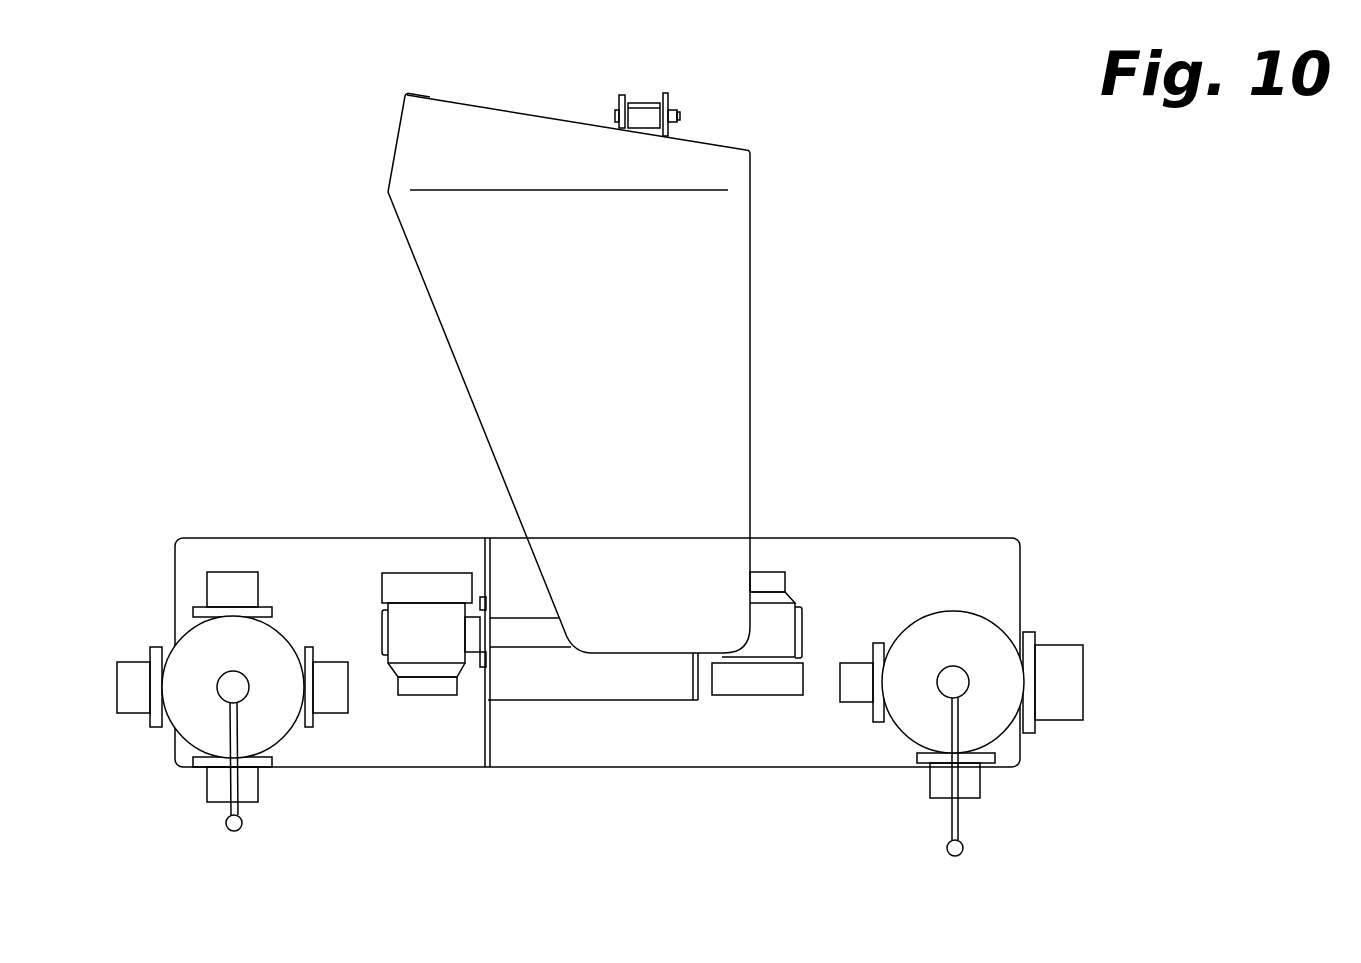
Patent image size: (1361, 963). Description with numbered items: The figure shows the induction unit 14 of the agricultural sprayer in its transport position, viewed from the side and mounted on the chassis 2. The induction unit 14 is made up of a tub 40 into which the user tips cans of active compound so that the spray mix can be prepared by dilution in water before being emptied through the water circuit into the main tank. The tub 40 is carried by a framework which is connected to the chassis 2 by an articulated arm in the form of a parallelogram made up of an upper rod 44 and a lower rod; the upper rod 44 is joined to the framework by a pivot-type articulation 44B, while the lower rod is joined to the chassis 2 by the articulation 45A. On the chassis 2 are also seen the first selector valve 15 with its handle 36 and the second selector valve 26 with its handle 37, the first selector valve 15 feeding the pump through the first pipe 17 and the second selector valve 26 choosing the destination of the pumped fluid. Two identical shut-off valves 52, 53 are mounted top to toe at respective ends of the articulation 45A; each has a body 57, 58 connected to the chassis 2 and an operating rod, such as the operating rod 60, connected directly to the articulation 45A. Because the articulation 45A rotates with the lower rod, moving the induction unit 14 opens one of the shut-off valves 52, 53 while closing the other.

The chassis 2 is at (1062, 493).
The induction unit 14 is at (790, 283).
The first selector valve 15 is at (983, 612).
The first pipe 17 is at (618, 95).
The second selector valve 26 is at (188, 625).
The handle 36 is at (960, 818).
The handle 37 is at (225, 808).
The tub 40 is at (408, 93).
The upper rod 44 is at (653, 105).
The articulation 44B is at (682, 104).
The articulation 45A is at (523, 647).
The shut-off valve 52 is at (756, 748).
The shut-off valve 53 is at (401, 713).
The body 57 is at (778, 568).
The body 58 is at (403, 573).
The operating rod 60 is at (480, 653).